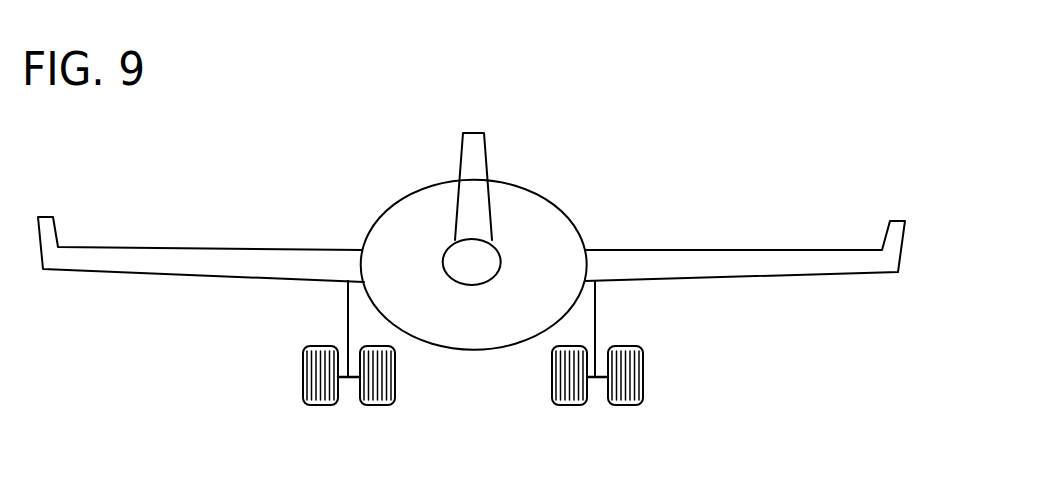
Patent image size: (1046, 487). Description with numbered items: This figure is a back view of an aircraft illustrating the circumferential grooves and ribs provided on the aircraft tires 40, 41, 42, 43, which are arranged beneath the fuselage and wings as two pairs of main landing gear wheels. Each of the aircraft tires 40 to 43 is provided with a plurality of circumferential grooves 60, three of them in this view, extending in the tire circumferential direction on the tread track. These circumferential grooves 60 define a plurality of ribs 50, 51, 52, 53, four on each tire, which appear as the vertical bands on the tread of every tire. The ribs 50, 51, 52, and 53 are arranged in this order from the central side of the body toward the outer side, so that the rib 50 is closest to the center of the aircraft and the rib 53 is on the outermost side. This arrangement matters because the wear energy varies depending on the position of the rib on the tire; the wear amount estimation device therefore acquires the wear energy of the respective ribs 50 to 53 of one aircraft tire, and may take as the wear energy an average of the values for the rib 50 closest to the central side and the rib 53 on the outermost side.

The aircraft tire 40 is at (644, 377).
The aircraft tire 41 is at (551, 377).
The aircraft tire 42 is at (396, 377).
The aircraft tire 43 is at (302, 375).
The rib 50 is at (331, 407).
The rib 51 is at (382, 344).
The rib 52 is at (372, 347).
The rib 53 is at (303, 348).
The circumferential grooves 60 is at (327, 405).